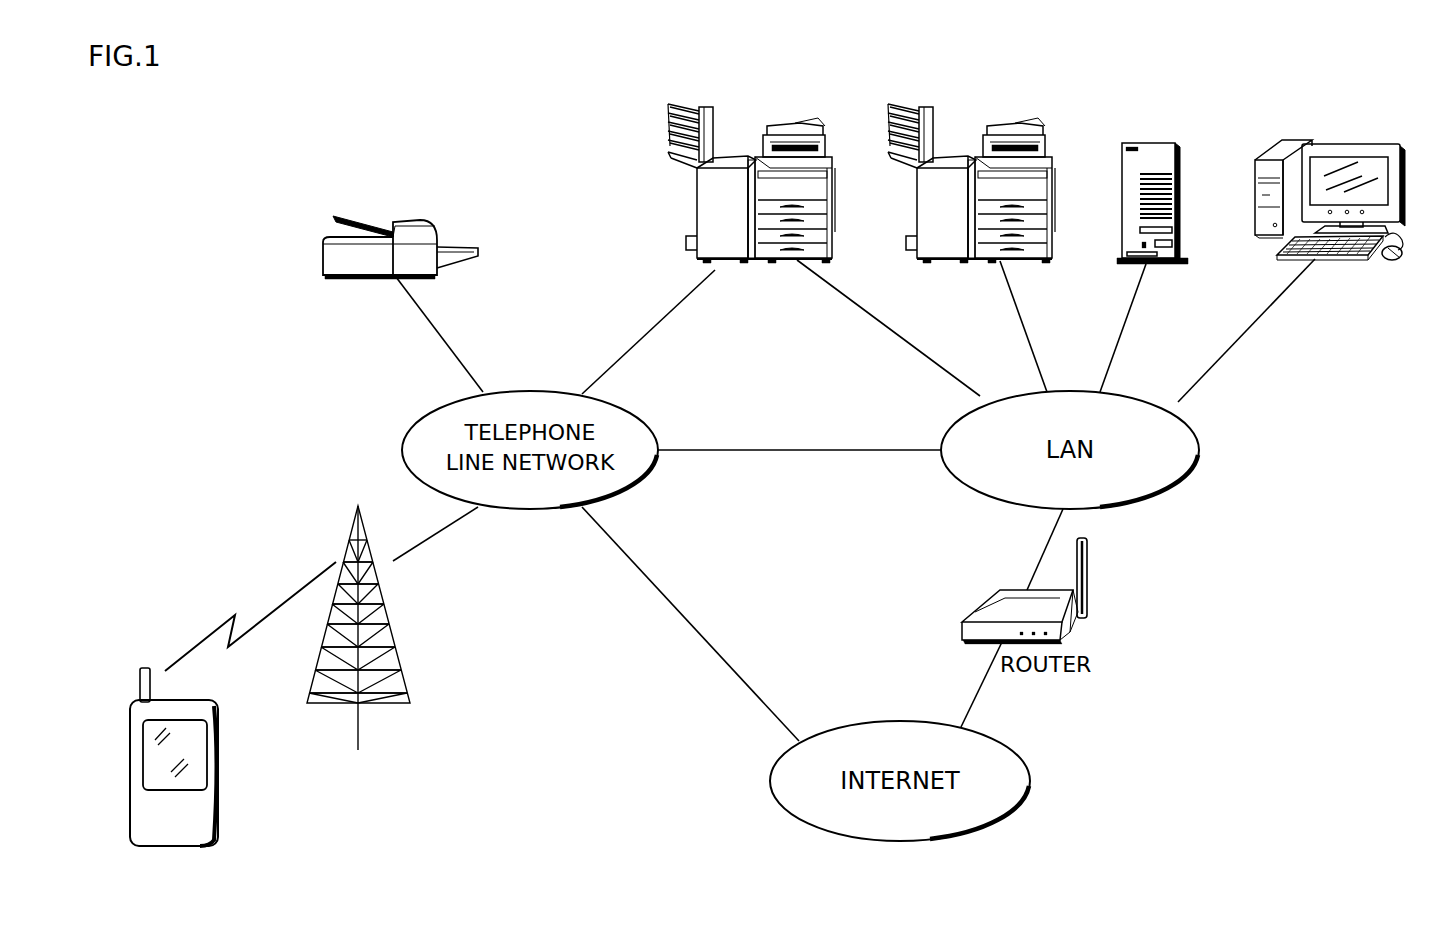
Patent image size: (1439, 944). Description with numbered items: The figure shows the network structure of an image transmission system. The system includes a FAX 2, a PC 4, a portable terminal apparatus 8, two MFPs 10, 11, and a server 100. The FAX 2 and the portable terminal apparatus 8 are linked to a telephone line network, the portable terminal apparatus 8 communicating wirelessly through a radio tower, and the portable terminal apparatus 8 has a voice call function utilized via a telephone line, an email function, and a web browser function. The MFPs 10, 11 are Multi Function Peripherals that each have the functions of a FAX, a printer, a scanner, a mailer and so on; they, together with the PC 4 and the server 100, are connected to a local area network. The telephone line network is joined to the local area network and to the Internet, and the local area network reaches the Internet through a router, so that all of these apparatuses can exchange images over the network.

The FAX 2 is at (343, 212).
The PC 4 is at (1384, 142).
The portable terminal apparatus 8 is at (218, 700).
The MFP 10 is at (702, 105).
The MFP 11 is at (922, 105).
The server 100 is at (1170, 142).